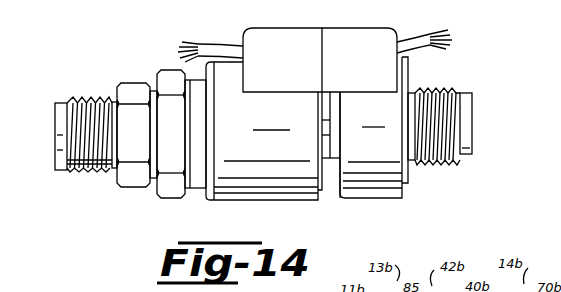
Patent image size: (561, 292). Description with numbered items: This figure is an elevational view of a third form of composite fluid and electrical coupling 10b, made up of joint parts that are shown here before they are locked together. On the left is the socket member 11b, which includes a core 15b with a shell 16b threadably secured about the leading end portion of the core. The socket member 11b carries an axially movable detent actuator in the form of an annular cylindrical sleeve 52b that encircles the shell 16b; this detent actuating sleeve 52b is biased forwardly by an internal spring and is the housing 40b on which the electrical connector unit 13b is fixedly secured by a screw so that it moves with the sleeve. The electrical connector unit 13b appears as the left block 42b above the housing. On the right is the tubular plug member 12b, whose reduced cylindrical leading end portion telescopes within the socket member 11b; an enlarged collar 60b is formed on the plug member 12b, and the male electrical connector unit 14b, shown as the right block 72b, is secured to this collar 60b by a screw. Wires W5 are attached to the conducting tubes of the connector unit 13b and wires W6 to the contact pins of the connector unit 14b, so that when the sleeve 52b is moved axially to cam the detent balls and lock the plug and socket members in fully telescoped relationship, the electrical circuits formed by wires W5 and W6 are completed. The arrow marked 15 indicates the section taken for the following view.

The composite coupling 10b is at (132, 49).
The socket member 11b is at (85, 184).
The plug member 12b is at (482, 107).
The electrical connector unit 13b is at (297, 24).
The male electrical connector unit 14b is at (393, 20).
The core 15b is at (140, 185).
The shell 16b is at (194, 196).
The housing body 40b is at (262, 131).
The first terminal block 42b is at (298, 63).
The detent actuating sleeve 52b is at (298, 199).
The collar 60b is at (410, 183).
The second terminal block 72b is at (374, 63).
The wires W5 is at (182, 48).
The wires W6 is at (455, 34).
The section line for FIG. 15 is at (476, 58).